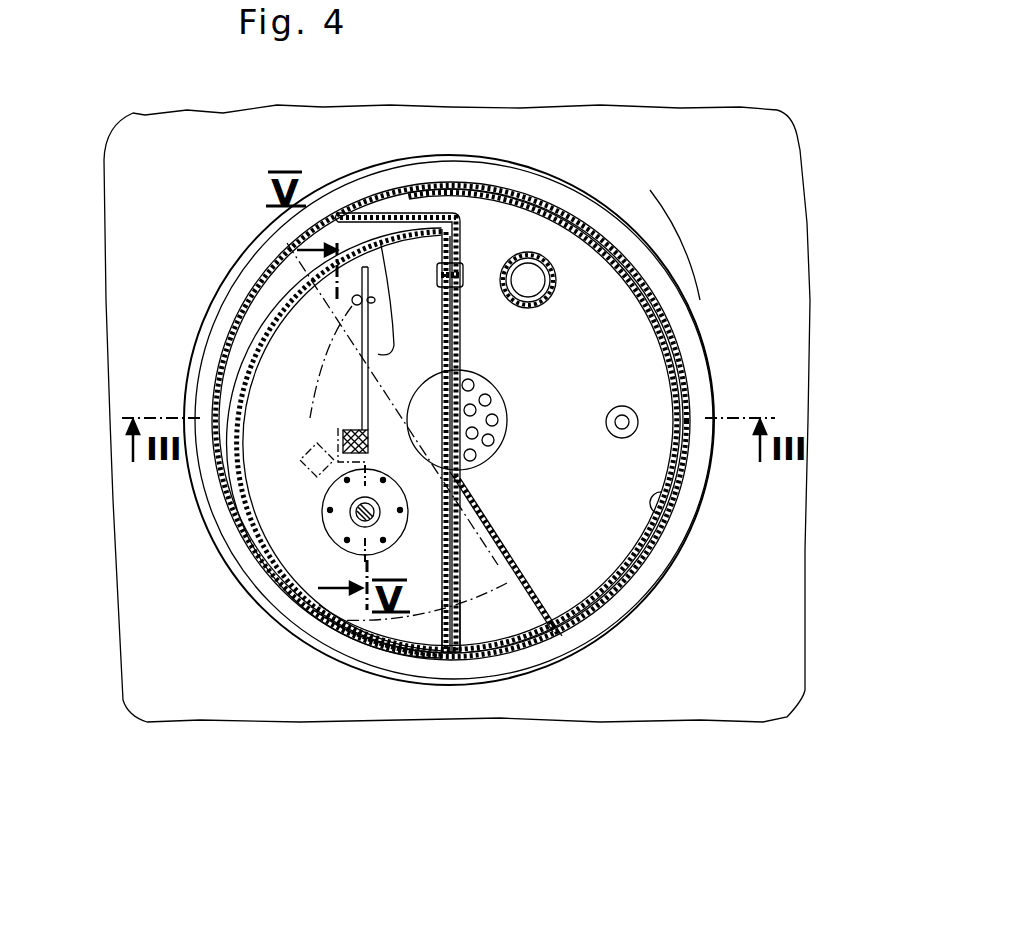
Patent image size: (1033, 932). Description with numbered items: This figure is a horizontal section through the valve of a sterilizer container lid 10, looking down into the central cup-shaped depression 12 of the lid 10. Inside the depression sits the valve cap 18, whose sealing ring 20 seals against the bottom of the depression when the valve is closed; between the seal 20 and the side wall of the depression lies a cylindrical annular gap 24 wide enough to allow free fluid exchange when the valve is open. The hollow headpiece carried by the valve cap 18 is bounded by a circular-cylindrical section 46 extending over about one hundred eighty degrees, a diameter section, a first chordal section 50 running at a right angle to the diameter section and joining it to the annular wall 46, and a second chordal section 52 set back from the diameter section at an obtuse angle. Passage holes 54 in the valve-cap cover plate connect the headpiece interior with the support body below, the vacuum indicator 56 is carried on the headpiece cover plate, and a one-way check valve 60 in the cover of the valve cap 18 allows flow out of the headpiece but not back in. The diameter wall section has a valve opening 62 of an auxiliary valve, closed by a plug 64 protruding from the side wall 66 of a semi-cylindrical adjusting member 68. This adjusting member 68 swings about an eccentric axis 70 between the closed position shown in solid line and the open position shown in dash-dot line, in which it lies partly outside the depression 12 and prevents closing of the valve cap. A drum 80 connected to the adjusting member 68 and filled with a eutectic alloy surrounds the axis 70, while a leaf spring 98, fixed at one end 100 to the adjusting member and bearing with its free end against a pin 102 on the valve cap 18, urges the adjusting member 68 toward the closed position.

The lid 10 is at (740, 114).
The cup-shaped depression 12 is at (270, 587).
The valve cap 18 is at (235, 455).
The sealing ring 20 is at (677, 284).
The cylindrical annular gap 24 is at (465, 242).
The circular-cylindrical section 46 is at (665, 517).
The first chordal section 50 is at (418, 212).
The second chordal section 52 is at (513, 550).
The passage holes 54 is at (500, 425).
The vacuum indicator 56 is at (532, 282).
The one-way check valve 60 is at (623, 440).
The valve opening 62 is at (700, 352).
The plug 64 is at (462, 262).
The side wall 66 is at (457, 580).
The adjusting member 68 is at (262, 348).
The axis 70 is at (362, 512).
The drum 80 is at (400, 517).
The leaf spring 98 is at (376, 232).
The end 100 is at (343, 428).
The pin 102 is at (352, 305).